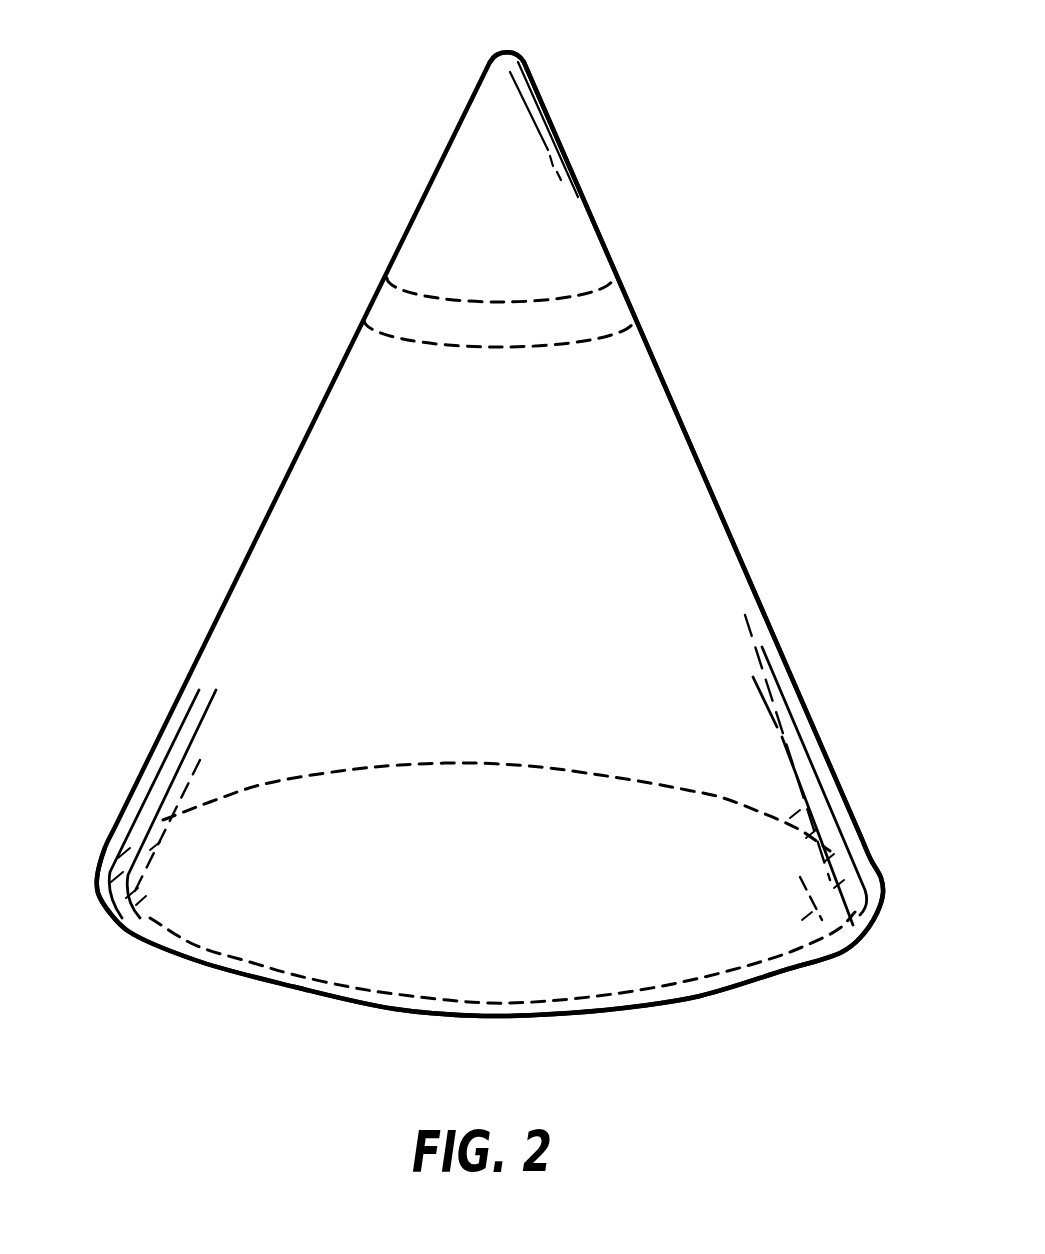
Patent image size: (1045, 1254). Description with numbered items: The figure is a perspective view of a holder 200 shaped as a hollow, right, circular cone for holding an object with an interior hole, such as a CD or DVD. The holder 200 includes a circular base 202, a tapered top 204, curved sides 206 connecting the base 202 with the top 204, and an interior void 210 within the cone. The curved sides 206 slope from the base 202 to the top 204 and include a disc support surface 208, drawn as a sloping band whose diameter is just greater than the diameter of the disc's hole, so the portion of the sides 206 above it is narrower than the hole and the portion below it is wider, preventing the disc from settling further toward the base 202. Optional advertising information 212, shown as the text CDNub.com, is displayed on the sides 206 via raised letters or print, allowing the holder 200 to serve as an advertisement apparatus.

The holder 200 is at (165, 47).
The circular base 202 is at (773, 983).
The tapered top 204 is at (570, 37).
The curved sides 206 is at (655, 482).
The disc support surface 208 is at (403, 309).
The interior void 210 is at (274, 1034).
The advertising information 212 is at (565, 929).